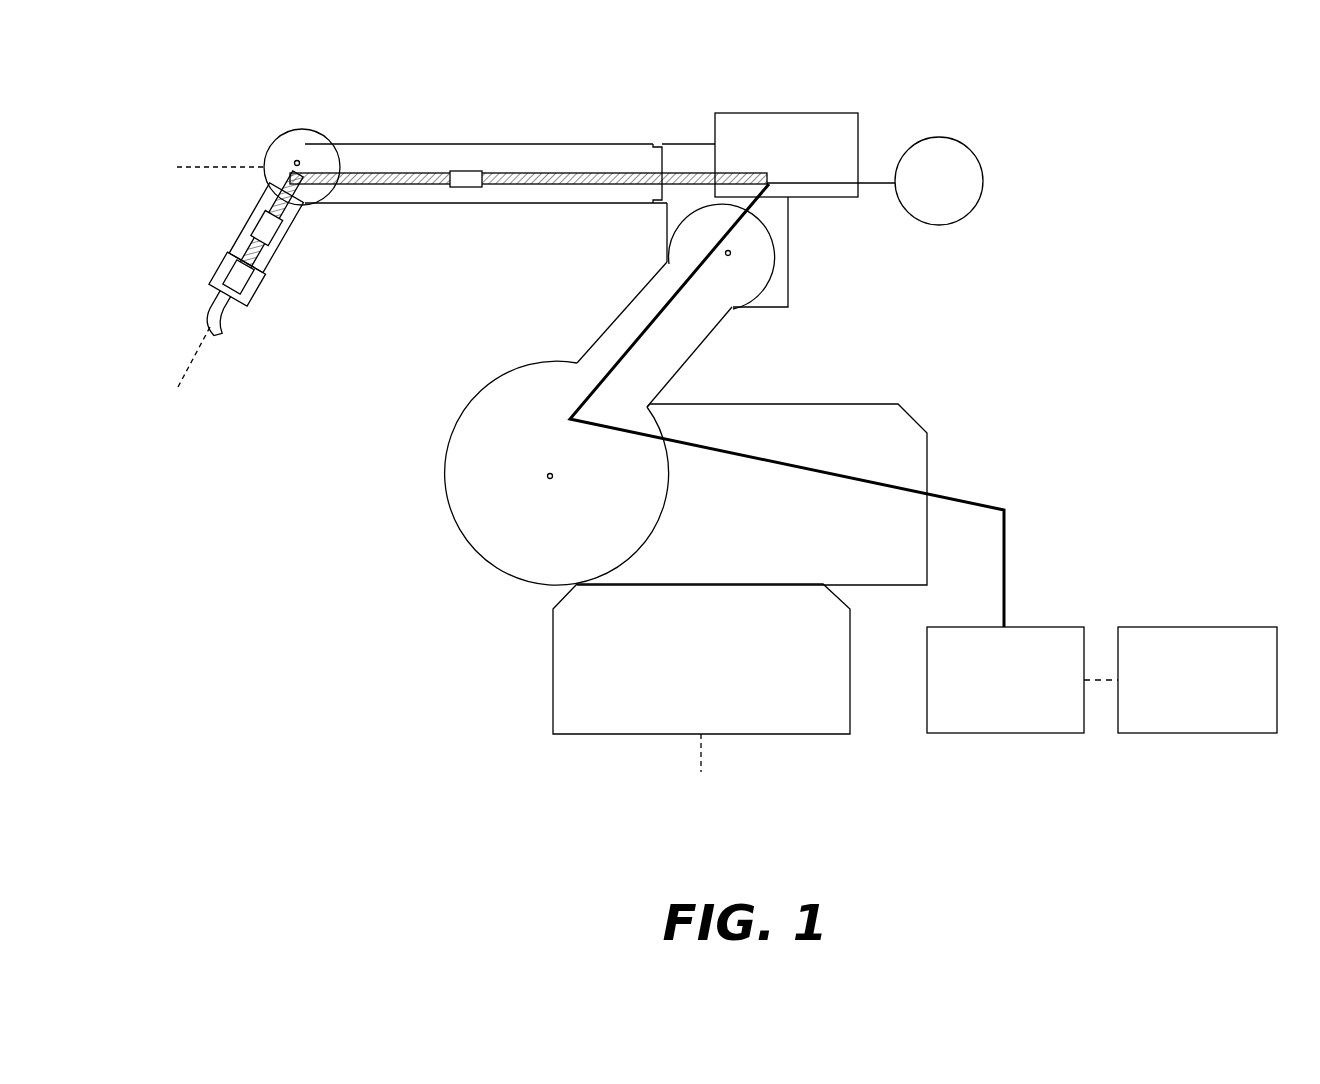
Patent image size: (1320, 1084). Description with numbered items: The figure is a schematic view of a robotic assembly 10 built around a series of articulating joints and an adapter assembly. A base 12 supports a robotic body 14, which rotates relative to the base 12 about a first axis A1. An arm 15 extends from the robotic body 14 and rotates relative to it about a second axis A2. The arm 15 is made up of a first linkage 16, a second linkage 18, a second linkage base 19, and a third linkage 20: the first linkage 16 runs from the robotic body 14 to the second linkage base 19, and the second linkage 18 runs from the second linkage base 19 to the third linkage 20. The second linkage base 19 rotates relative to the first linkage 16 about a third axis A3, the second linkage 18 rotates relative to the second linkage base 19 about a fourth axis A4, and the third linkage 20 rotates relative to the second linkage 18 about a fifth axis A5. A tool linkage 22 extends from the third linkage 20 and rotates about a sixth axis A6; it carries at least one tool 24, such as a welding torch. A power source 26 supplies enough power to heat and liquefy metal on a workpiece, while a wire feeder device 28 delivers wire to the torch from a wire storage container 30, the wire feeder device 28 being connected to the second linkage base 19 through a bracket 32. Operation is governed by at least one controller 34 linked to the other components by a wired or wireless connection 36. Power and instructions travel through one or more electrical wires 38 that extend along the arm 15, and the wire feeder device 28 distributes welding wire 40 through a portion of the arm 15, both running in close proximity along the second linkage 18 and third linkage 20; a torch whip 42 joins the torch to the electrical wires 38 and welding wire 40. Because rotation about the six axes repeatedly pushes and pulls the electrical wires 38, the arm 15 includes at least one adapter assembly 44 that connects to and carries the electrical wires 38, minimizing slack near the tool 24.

The robotic assembly 10 is at (1185, 144).
The base 12 is at (555, 683).
The robotic body 14 is at (895, 430).
The arm 15 is at (606, 268).
The first linkage 16 is at (483, 420).
The second linkage 18 is at (565, 150).
The second linkage base 19 is at (783, 215).
The third linkage 20 is at (243, 238).
The tool linkage 22 is at (213, 280).
The tool 24 is at (210, 315).
The power source 26 is at (1005, 680).
The wire feeder device 28 is at (786, 155).
The wire storage container 30 is at (939, 181).
The bracket 32 is at (715, 142).
The controller 34 is at (1197, 680).
The connection 36 is at (1092, 680).
The electrical wires 38 is at (1002, 504).
The welding wire 40 is at (870, 182).
The torch whip 42 is at (362, 178).
The adapter assembly 44 is at (455, 168).
The first axis A1 is at (701, 758).
The second axis A2 is at (552, 477).
The third axis A3 is at (730, 253).
The fourth axis A4 is at (196, 167).
The fifth axis A5 is at (297, 160).
The sixth axis A6 is at (185, 370).